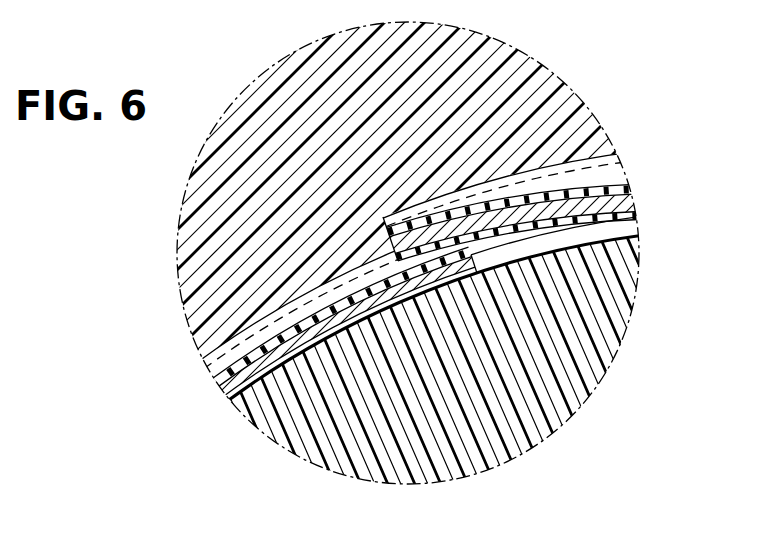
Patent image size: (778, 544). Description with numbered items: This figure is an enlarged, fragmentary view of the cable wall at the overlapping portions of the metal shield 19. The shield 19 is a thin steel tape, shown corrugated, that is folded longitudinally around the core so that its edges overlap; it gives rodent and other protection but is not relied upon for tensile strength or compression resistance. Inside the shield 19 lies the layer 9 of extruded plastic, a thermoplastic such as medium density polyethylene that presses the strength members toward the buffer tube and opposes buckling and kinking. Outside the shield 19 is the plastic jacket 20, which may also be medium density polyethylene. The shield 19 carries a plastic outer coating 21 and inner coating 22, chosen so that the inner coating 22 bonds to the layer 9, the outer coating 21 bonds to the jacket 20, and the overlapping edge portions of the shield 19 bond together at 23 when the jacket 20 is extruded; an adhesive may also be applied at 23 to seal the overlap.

The plastic jacket 20 is at (500, 53).
The layer of extruded plastic 9 is at (612, 352).
The metal shield 19 is at (612, 170).
The outer coating 21 is at (616, 198).
The inner coating 22 is at (625, 211).
The bond of overlapping edge portions 23 is at (447, 255).